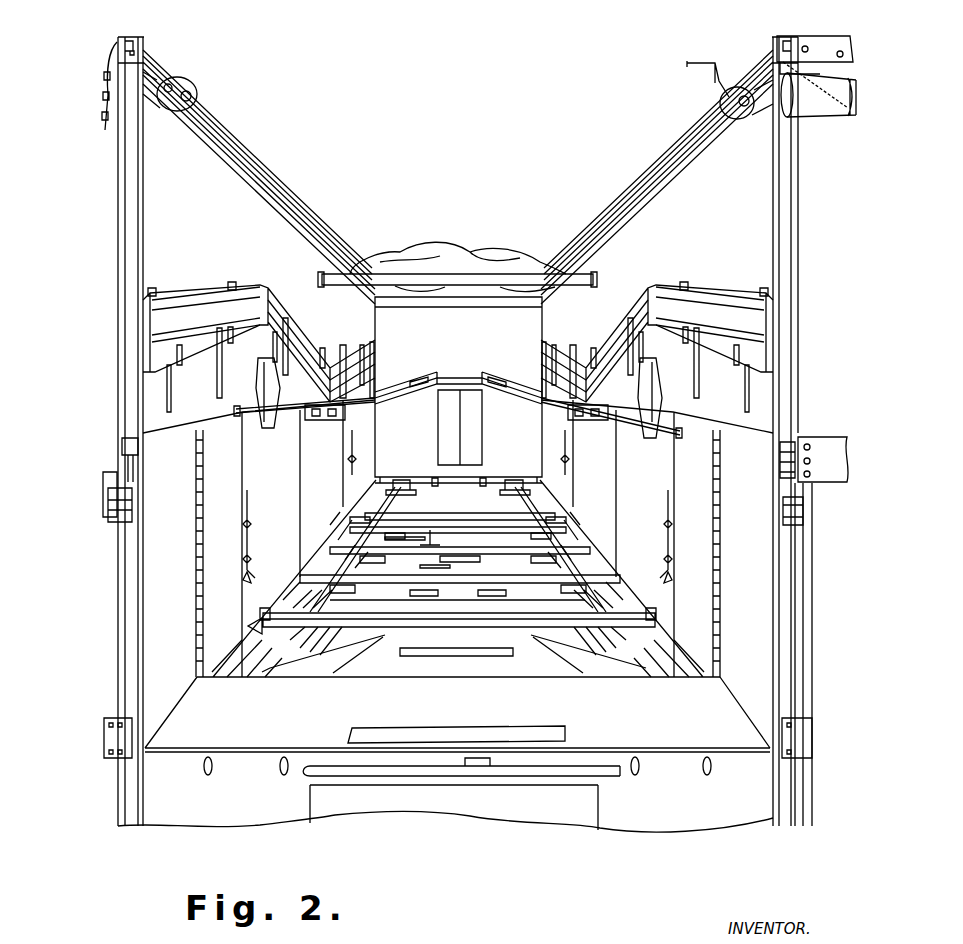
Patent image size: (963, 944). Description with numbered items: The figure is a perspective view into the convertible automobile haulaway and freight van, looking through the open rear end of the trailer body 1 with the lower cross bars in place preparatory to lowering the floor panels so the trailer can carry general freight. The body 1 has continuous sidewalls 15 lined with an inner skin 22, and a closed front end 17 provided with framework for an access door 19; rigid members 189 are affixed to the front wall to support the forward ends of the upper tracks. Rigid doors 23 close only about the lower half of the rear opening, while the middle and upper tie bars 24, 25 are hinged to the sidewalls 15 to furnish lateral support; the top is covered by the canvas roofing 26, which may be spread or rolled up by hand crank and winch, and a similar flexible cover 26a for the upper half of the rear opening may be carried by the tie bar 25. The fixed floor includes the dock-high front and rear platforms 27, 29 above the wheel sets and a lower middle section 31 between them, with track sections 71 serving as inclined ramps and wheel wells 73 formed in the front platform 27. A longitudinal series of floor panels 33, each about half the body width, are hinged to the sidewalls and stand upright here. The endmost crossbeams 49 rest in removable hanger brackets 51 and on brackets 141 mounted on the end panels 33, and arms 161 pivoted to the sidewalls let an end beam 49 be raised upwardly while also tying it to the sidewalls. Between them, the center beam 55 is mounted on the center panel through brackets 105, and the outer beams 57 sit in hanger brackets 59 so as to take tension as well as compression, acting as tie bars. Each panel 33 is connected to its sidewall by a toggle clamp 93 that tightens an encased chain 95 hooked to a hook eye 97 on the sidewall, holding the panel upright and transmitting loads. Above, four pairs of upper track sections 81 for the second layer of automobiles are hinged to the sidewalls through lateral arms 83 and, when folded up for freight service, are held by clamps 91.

The trailer body 1 is at (756, 830).
The sidewalls 15 is at (210, 163).
The closed front end 17 is at (464, 332).
The access door 19 is at (438, 416).
The inner skin 22 is at (184, 176).
The rigid doors 23 is at (108, 645).
The middle tie bar 24 is at (820, 488).
The upper tie bar 25 is at (806, 42).
The canvas roofing 26 is at (386, 258).
The flexible cover 26a is at (815, 112).
The front platform 27 is at (484, 478).
The rear platform 29 is at (462, 719).
The middle floor section 31 is at (420, 676).
The floor panels 33 is at (232, 504).
The endmost crossbeams 49 is at (437, 490).
The hanger brackets 51 is at (372, 507).
The center beam 55 is at (437, 548).
The outer beams 57 is at (468, 533).
The hanger brackets 59 is at (252, 578).
The automobile track sections 71 is at (435, 486).
The wheel wells 73 is at (397, 480).
The upper track sections 81 is at (215, 292).
The lateral arms 83 is at (168, 392).
The clamps 91 is at (153, 287).
The toggle clamp 93 is at (251, 520).
The chain or cable member 95 is at (206, 460).
The hook eye 97 is at (240, 408).
The brackets 105 is at (320, 405).
The brackets 141 is at (385, 382).
The arms 161 is at (274, 400).
The rigid members 189 is at (455, 366).